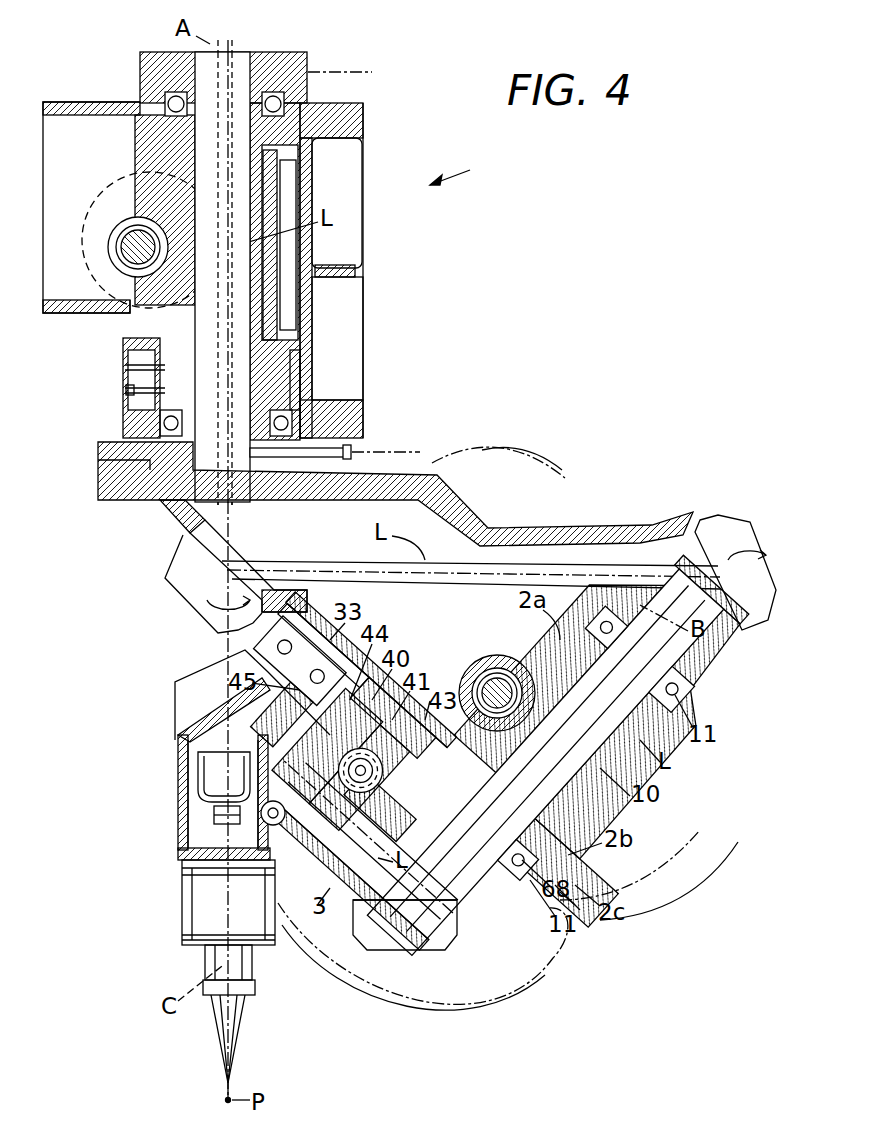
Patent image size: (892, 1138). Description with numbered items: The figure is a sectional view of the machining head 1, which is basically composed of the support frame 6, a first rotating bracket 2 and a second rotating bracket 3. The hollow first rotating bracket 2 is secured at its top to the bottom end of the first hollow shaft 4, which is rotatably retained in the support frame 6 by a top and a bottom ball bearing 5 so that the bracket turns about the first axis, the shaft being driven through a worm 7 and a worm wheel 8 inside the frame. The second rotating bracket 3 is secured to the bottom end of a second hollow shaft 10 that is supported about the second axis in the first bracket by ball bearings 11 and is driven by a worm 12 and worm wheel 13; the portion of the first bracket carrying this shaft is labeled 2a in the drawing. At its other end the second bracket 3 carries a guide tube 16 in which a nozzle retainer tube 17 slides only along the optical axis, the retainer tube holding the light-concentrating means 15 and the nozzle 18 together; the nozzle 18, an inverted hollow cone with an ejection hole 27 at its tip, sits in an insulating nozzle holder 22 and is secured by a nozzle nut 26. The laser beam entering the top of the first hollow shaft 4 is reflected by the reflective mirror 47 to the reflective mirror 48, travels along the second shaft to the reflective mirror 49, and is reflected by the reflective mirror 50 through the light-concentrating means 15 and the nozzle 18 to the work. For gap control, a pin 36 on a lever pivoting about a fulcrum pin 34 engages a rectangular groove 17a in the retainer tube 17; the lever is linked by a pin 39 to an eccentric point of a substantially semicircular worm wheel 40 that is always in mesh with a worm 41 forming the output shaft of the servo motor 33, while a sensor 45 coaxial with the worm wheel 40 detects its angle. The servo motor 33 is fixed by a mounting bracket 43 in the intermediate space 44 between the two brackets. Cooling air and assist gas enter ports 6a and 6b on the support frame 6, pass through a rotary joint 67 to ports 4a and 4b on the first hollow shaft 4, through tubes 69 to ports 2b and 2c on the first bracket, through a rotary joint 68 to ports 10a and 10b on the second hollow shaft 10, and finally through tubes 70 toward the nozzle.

The machining head 1 is at (492, 183).
The first rotating bracket 2 is at (518, 528).
The housing upper wall 2a is at (599, 672).
The port 2b is at (654, 766).
The port 2c is at (567, 885).
The second rotating bracket 3 is at (356, 772).
The first hollow shaft 4 is at (265, 318).
The port 4a is at (352, 452).
The port 4b is at (377, 449).
The ball bearing 5 is at (170, 104).
The support frame 6 is at (360, 123).
The port 6a is at (128, 368).
The port 6b is at (128, 390).
The worm 7 is at (112, 252).
The worm wheel 8 is at (283, 245).
The second hollow shaft 10 is at (562, 778).
The port 10a is at (570, 915).
The port 10b is at (550, 938).
The ball bearing 11 is at (655, 687).
The worm 12 is at (472, 690).
The worm wheel 13 is at (520, 665).
The light-concentrating means 15 is at (182, 916).
The guide tube 16 is at (198, 780).
The nozzle retainer tube 17 is at (178, 767).
The rectangular groove 17a is at (180, 856).
The nozzle 18 is at (218, 1056).
The nozzle holder 22 is at (205, 966).
The nozzle nut 26 is at (255, 989).
The ejection hole 27 is at (226, 1089).
The servo motor 33 is at (330, 638).
The fulcrum pin 34 is at (280, 830).
The pin 36 is at (214, 815).
The pin 39 is at (375, 902).
The worm wheel 40 is at (361, 775).
The worm 41 is at (364, 774).
The mounting bracket 43 is at (407, 731).
The intermediate space 44 is at (306, 654).
The sensor 45 is at (272, 705).
The reflective mirror 47 is at (180, 556).
The reflective mirror 48 is at (740, 600).
The reflective mirror 49 is at (420, 905).
The reflective mirror 50 is at (205, 722).
The rotary joint 67 is at (300, 355).
The rotary joint 68 is at (536, 878).
The tubes 69 is at (480, 448).
The tubes 70 is at (520, 1006).